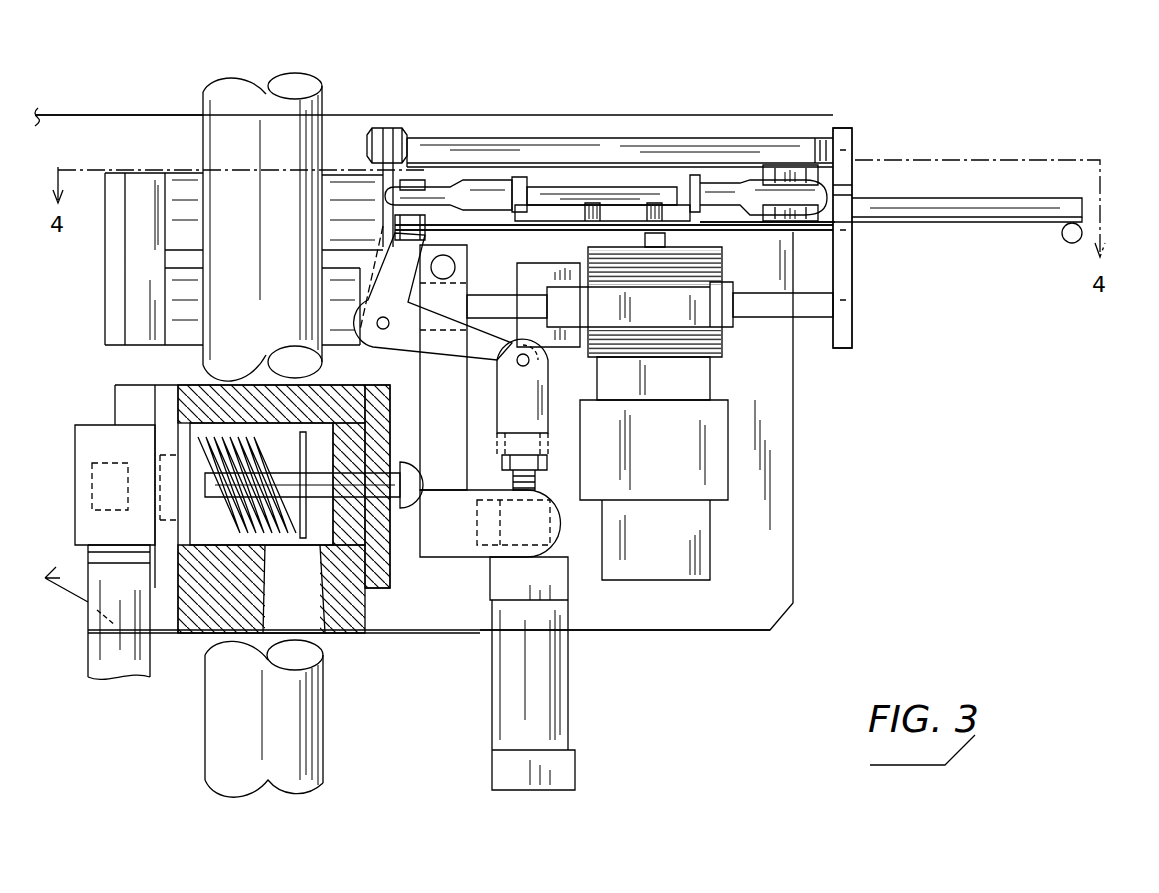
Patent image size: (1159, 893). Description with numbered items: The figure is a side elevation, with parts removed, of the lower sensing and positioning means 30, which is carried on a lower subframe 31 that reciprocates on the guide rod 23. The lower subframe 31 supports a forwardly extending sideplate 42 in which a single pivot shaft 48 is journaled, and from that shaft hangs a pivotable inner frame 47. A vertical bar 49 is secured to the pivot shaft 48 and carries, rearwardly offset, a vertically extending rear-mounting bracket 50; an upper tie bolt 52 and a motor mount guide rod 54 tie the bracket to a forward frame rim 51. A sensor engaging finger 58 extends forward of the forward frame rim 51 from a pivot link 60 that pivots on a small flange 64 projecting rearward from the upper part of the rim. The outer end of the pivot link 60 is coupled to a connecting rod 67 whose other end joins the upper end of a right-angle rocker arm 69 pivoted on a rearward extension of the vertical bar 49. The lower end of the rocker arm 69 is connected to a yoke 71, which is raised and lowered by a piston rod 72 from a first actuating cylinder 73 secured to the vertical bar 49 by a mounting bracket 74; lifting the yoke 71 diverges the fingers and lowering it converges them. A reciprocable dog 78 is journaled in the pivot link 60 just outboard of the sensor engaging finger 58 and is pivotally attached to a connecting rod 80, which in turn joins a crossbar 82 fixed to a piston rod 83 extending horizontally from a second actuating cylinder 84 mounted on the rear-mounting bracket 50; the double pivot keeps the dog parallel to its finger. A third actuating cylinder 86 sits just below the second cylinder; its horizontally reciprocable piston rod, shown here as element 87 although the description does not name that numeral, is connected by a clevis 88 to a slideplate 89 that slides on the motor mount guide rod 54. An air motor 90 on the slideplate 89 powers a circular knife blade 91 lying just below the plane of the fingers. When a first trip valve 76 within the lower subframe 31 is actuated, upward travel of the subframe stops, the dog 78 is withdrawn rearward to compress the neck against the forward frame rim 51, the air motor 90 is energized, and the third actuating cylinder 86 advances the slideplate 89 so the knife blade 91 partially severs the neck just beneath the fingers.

The guide rod 23 is at (323, 725).
The lower sensing and positioning means 30 is at (868, 333).
The lower subframe 31 is at (785, 577).
The sideplate 42 is at (745, 620).
The pivotable inner frame 47 is at (858, 120).
The pivot shaft 48 is at (467, 250).
The vertical bar 49 is at (452, 478).
The rear-mounting bracket 50 is at (387, 128).
The forward frame rim 51 is at (850, 280).
The upper tie bolt 52 is at (530, 138).
The motor mount guide rod 54 is at (800, 318).
The sensor engaging finger 58 is at (935, 222).
The pivot link 60 is at (790, 167).
The flange 64 is at (855, 190).
The connecting rod 67 is at (640, 207).
The rocker arm 69 is at (385, 345).
The yoke 71 is at (540, 385).
The piston rod 72 is at (540, 485).
The first actuating cylinder 73 is at (568, 695).
The mounting bracket 74 is at (458, 538).
The first trip valve 76 is at (405, 510).
The reciprocable dog 78 is at (955, 200).
The connecting rod 80 is at (645, 210).
The crossbar 82 is at (560, 207).
The piston rod 83 is at (452, 185).
The second actuating cylinder 84 is at (143, 173).
The third actuating cylinder 86 is at (130, 345).
The arm 87 is at (480, 300).
The clevis 88 is at (536, 256).
The slideplate 89 is at (588, 316).
The air motor 90 is at (722, 345).
The circular knife blade 91 is at (800, 232).